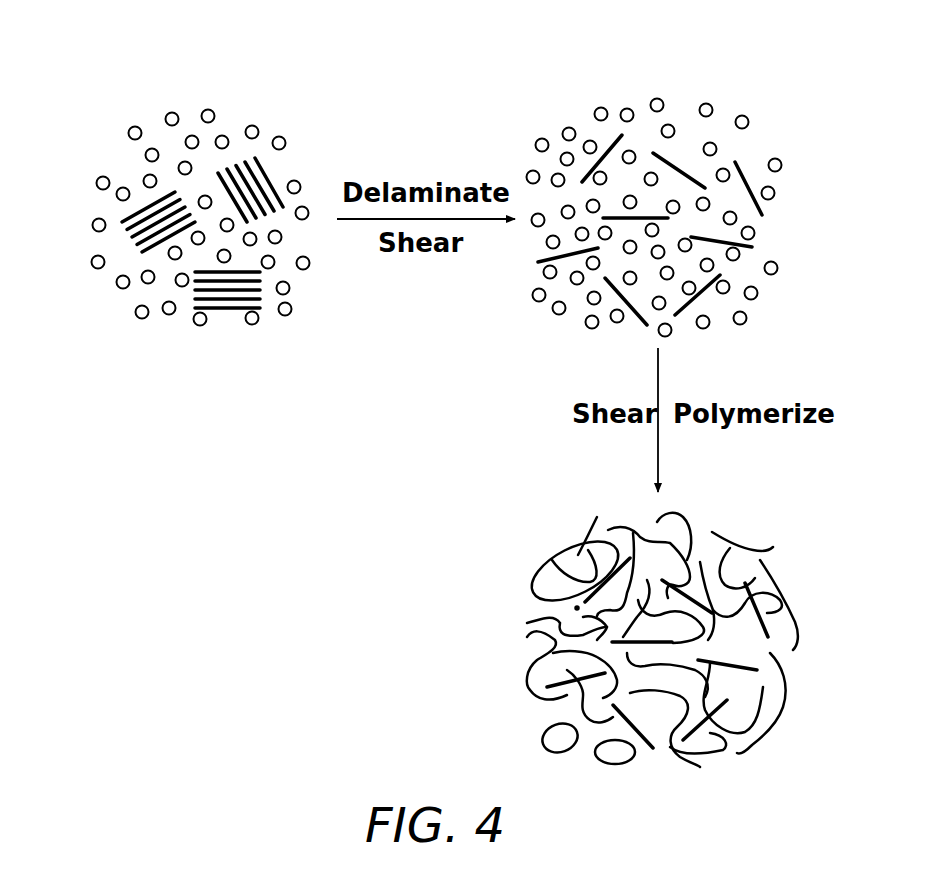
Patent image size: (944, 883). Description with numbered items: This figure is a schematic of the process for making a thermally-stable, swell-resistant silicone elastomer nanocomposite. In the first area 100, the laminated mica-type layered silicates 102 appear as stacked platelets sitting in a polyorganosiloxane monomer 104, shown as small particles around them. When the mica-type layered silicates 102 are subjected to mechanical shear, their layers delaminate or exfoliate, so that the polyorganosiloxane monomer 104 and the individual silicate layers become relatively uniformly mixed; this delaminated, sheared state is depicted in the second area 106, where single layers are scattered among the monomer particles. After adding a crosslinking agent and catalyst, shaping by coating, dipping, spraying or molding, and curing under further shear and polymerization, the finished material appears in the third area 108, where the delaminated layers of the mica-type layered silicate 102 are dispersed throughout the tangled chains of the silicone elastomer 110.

The first area 100 is at (138, 100).
The mica-type layered silicates 102 is at (125, 222).
The polyorganosiloxane monomer 104 is at (279, 136).
The second area 106 is at (613, 71).
The third area 108 is at (541, 543).
The silicone elastomer 110 is at (763, 543).